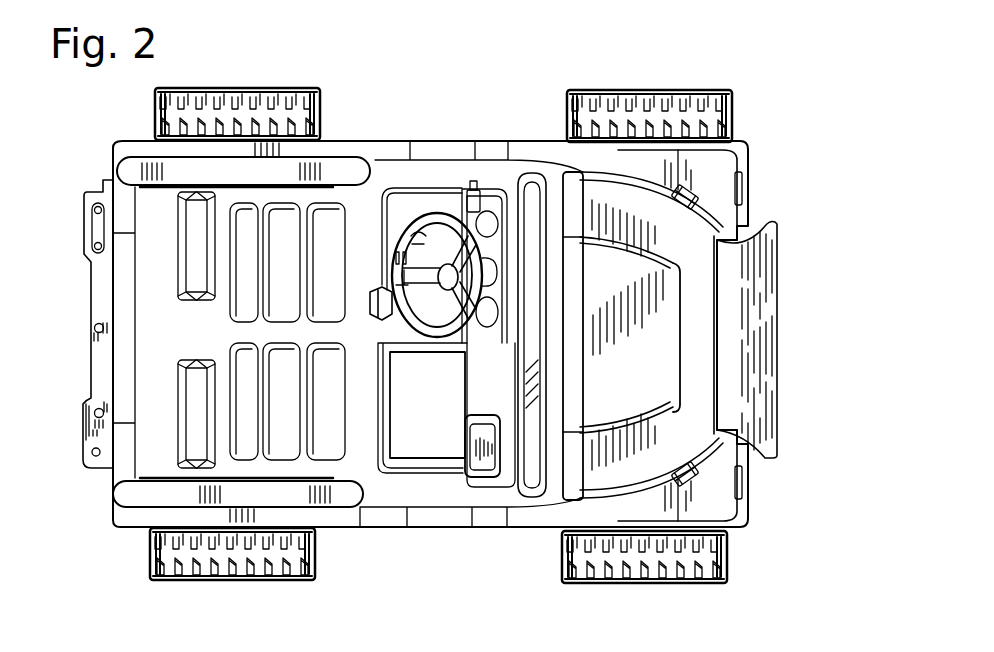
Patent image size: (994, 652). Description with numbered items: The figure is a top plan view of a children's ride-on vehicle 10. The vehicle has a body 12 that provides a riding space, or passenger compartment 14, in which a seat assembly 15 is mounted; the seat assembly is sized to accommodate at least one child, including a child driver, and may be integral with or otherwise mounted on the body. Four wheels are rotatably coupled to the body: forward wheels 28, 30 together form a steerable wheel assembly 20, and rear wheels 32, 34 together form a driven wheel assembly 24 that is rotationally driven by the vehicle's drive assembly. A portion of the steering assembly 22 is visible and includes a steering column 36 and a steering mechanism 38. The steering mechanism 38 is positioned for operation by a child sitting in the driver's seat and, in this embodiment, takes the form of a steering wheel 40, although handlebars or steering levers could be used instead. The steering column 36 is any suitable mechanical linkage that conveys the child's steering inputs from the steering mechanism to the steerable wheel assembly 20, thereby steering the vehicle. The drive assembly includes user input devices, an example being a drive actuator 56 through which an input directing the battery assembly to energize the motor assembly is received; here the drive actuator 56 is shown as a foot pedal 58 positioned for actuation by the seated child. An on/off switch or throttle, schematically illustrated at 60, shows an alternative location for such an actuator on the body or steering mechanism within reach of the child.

The children's ride-on vehicle 10 is at (822, 196).
The body 12 is at (780, 365).
The passenger compartment 14 is at (420, 132).
The seat assembly 15 is at (219, 347).
The steerable wheel assembly 20 is at (690, 88).
The steering assembly 22 is at (500, 293).
The driven wheel assembly 24 is at (272, 86).
The forward wheel 28 is at (600, 91).
The forward wheel 30 is at (608, 587).
The rear wheel 32 is at (198, 584).
The rear wheel 34 is at (180, 88).
The steering column 36 is at (496, 272).
The steering mechanism 38 is at (406, 330).
The steering wheel 40 is at (450, 343).
The drive actuator 56 is at (412, 235).
The foot pedal 58 is at (415, 291).
The on/off switch or throttle 60 is at (403, 280).